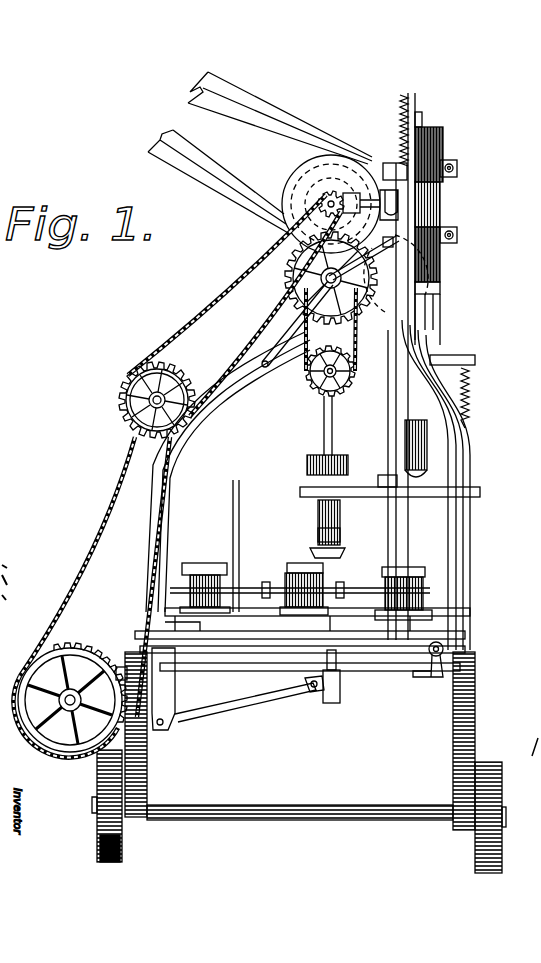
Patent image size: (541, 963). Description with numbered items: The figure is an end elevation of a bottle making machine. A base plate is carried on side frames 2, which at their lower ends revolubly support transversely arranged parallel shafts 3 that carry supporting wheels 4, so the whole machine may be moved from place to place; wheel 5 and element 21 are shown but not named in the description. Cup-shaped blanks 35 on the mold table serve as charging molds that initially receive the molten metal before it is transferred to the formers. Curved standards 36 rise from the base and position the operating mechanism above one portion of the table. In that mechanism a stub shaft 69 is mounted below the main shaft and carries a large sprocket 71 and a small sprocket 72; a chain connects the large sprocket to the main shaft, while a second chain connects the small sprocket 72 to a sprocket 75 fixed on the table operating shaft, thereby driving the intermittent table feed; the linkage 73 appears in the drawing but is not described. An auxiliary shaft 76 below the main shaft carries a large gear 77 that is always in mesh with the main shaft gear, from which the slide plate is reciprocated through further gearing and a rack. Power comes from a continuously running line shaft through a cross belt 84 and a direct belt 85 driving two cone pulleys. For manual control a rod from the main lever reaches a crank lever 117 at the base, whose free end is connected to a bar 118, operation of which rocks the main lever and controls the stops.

The side frames 2 is at (143, 763).
The shafts 3 is at (288, 806).
The supporting wheels 4 is at (123, 843).
The rear wheel 5 is at (453, 817).
The spool 21 is at (287, 575).
The blanks 35 is at (203, 564).
The standards 36 is at (187, 463).
The stub shaft 69 is at (157, 400).
The large sprocket 71 is at (176, 380).
The small sprocket 72 is at (133, 398).
The connecting rod 73 is at (235, 294).
The sprocket 75 is at (100, 633).
The auxiliary shaft 76 is at (330, 276).
The large gear 77 is at (270, 256).
The cross belt 84 is at (240, 167).
The direct belt 85 is at (283, 95).
The crank lever 117 is at (478, 660).
The bar 118 is at (382, 677).